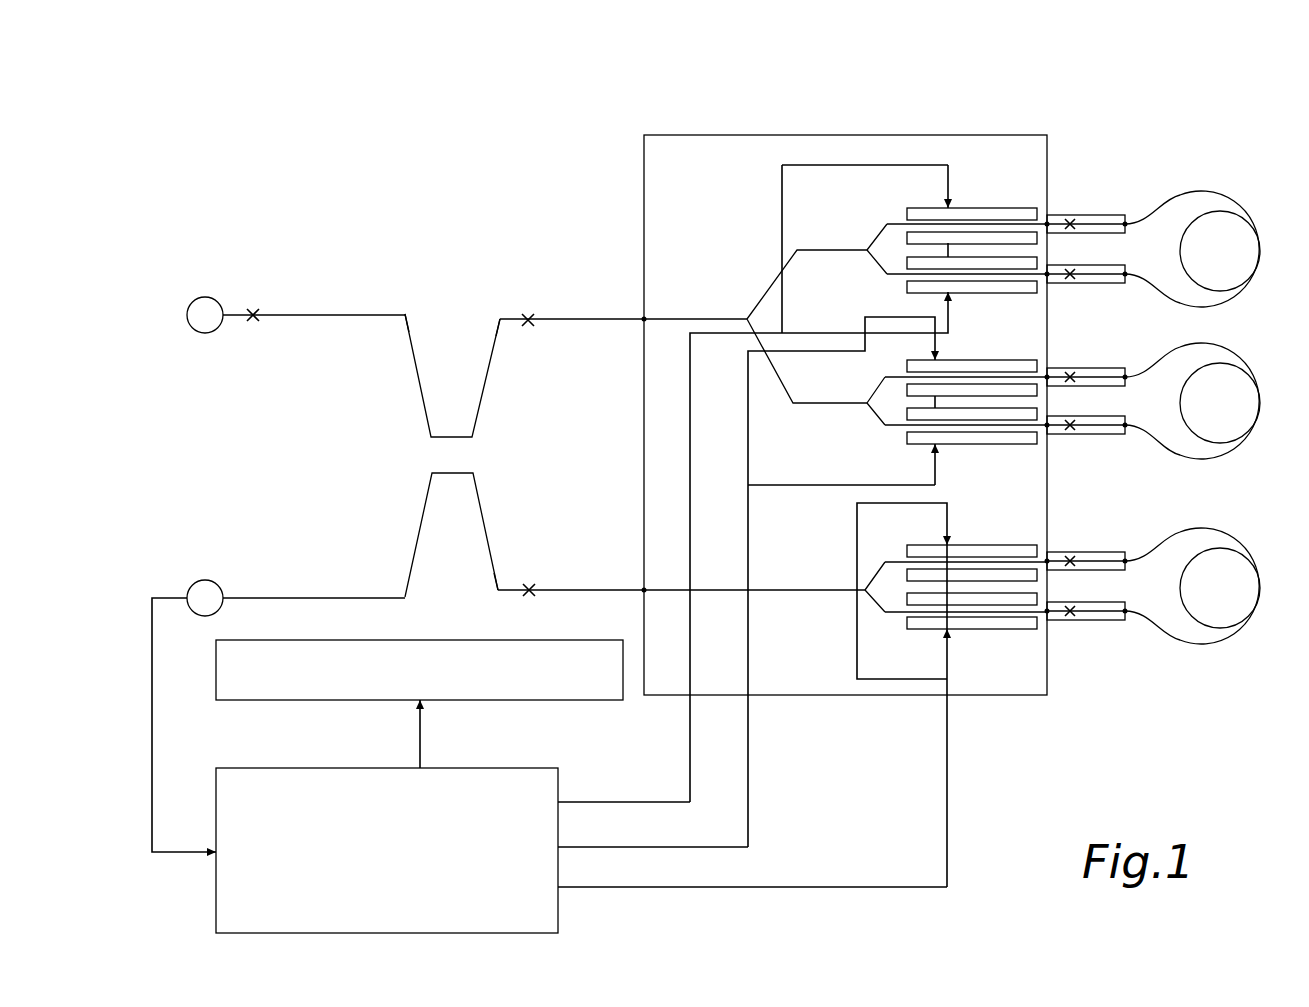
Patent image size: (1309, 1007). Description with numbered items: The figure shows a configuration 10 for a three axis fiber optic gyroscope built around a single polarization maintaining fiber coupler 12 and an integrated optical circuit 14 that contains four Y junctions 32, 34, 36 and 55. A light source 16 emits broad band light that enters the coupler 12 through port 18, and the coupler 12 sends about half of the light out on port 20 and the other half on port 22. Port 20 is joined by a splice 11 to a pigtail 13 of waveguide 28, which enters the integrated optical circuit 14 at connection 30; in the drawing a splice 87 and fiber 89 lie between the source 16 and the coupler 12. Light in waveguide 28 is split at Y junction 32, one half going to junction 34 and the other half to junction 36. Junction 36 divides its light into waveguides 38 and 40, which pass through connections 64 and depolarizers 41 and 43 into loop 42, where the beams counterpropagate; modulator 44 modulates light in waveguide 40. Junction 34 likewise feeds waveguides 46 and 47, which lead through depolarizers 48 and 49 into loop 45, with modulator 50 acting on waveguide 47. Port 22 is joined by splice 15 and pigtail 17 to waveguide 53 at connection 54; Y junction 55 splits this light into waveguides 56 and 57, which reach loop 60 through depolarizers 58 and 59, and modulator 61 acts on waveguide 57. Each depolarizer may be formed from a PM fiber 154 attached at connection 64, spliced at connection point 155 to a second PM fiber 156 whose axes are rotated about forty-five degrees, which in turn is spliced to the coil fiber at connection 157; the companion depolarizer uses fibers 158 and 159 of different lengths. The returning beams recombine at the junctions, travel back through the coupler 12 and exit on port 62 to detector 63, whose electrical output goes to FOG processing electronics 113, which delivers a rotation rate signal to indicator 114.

The configuration 10 is at (750, 106).
The splice 11 is at (534, 314).
The polarization maintaining fiber coupler 12 is at (437, 459).
The pigtail 13 is at (572, 291).
The integrated optical circuit 14 is at (1026, 135).
The splice 15 is at (530, 589).
The light source 16 is at (205, 297).
The pigtail 17 is at (601, 589).
The port 18 is at (405, 312).
The port 20 is at (497, 317).
The port 22 is at (498, 592).
The waveguide 28 is at (708, 318).
The connection 30 is at (647, 318).
The Y junction 32 is at (748, 318).
The Y junction 34 is at (867, 250).
The Y junction 36 is at (867, 403).
The waveguide 38 is at (885, 377).
The waveguide 40 is at (885, 425).
The depolarizer 41 is at (1108, 369).
The loop 42 is at (1262, 403).
The depolarizer 43 is at (1122, 435).
The modulator 44 is at (960, 360).
The loop 45 is at (1262, 250).
The waveguide 46 is at (887, 224).
The waveguide 47 is at (885, 275).
The depolarizer 48 is at (1108, 216).
The depolarizer 49 is at (1087, 266).
The modulator 50 is at (962, 208).
The waveguide 53 is at (720, 589).
The connection 54 is at (646, 589).
The Y junction 55 is at (865, 590).
The waveguide 56 is at (899, 561).
The waveguide 57 is at (885, 612).
The depolarizer 58 is at (1052, 571).
The depolarizer 59 is at (1127, 621).
The loop 60 is at (1262, 588).
The modulator 61 is at (960, 545).
The port 62 is at (405, 600).
The detector 63 is at (208, 580).
The connection 64 is at (1046, 223).
The splice 87 is at (253, 308).
The optical fiber 89 is at (248, 320).
The FOG processing electronics 113 is at (312, 767).
The indicator 114 is at (560, 640).
The PM fiber 154 is at (1053, 216).
The connection point 155 is at (1071, 222).
The PM fiber 156 is at (1103, 216).
The connection 157 is at (1127, 223).
The fiber 158 is at (1052, 284).
The fiber 159 is at (1105, 284).